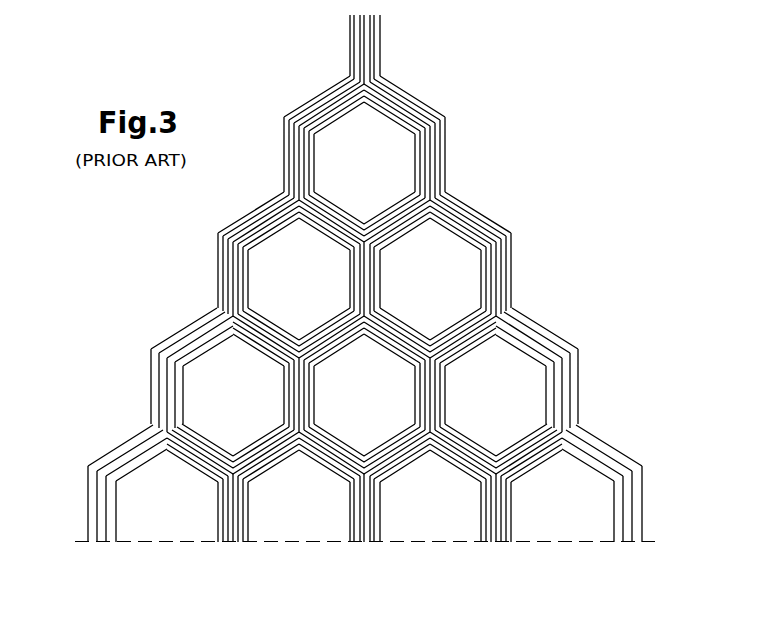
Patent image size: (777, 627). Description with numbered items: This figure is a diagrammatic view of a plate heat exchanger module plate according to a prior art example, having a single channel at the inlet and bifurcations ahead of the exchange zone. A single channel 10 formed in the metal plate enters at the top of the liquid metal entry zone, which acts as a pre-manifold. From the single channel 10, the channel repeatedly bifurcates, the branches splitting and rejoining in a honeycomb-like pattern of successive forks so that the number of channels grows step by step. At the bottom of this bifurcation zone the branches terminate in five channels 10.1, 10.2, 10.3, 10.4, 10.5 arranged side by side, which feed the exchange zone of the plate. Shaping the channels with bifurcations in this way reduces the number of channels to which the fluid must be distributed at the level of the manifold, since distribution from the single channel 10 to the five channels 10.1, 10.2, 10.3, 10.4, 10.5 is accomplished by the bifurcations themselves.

The single channel 10 is at (352, 50).
The channel 10.1 is at (103, 527).
The channel 10.2 is at (218, 523).
The channel 10.3 is at (353, 522).
The channel 10.4 is at (493, 520).
The channel 10.5 is at (630, 521).